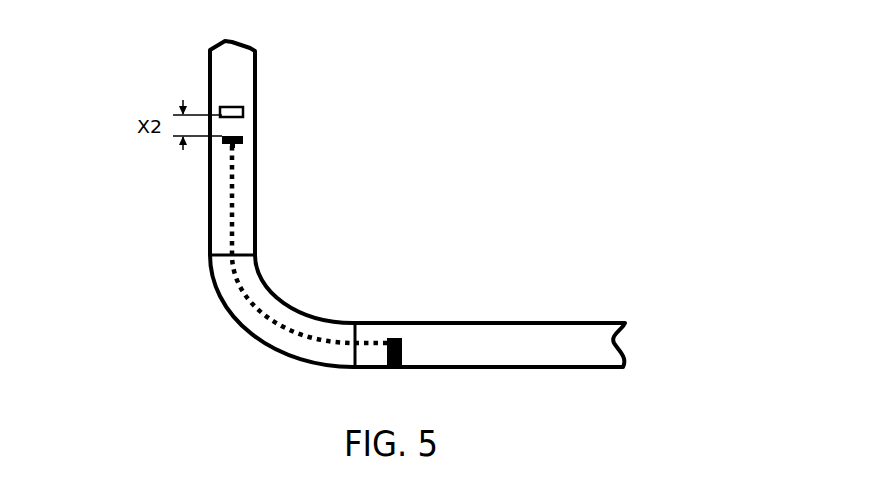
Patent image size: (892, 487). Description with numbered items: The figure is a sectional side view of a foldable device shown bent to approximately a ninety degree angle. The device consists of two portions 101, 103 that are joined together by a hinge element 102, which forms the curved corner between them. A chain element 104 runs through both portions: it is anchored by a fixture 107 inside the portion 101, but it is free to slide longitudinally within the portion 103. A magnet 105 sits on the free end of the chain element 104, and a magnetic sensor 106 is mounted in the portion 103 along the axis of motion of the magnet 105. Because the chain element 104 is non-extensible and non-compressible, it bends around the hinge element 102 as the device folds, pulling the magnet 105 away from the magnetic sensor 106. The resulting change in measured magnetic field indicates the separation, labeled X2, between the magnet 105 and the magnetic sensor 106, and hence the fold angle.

The portion 101 is at (625, 323).
The hinge element 102 is at (237, 322).
The portion 103 is at (203, 49).
The chain element 104 is at (273, 322).
The magnet 105 is at (243, 140).
The magnetic sensor 106 is at (243, 110).
The fixture 107 is at (402, 343).